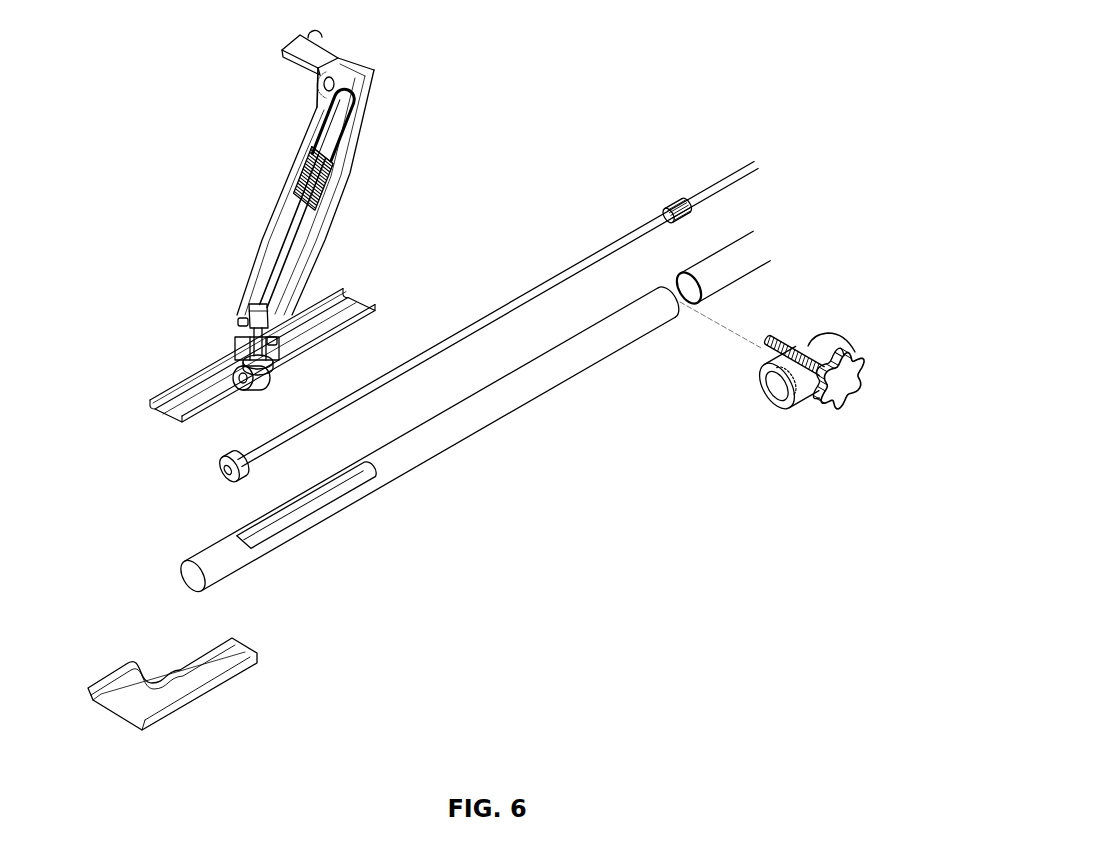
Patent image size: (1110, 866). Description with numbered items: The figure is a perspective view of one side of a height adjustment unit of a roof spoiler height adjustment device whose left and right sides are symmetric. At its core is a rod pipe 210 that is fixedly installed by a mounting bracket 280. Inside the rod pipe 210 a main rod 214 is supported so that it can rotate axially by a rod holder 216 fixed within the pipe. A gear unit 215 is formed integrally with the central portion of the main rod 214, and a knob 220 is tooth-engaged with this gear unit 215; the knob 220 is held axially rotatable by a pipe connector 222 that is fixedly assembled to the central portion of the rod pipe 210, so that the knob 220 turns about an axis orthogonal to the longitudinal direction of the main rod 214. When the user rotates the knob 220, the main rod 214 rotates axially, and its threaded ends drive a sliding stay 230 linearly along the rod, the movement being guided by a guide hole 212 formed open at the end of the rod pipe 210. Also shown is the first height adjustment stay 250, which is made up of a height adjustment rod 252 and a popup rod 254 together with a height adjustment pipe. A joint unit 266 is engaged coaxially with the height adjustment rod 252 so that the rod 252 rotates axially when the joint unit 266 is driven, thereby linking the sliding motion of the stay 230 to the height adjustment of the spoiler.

The rod pipe 210 is at (492, 397).
The guide hole 212 is at (370, 462).
The main rod 214 is at (581, 262).
The gear unit 215 is at (674, 206).
The rod holder 216 is at (220, 461).
The knob 220 is at (838, 388).
The pipe connector 222 is at (775, 400).
The first sliding stay 230 is at (355, 293).
The first height adjustment stay 250 is at (276, 183).
The height adjustment rod 252 is at (286, 243).
The popup rod 254 is at (344, 128).
The joint unit 266 is at (240, 321).
The mounting bracket 280 is at (233, 663).